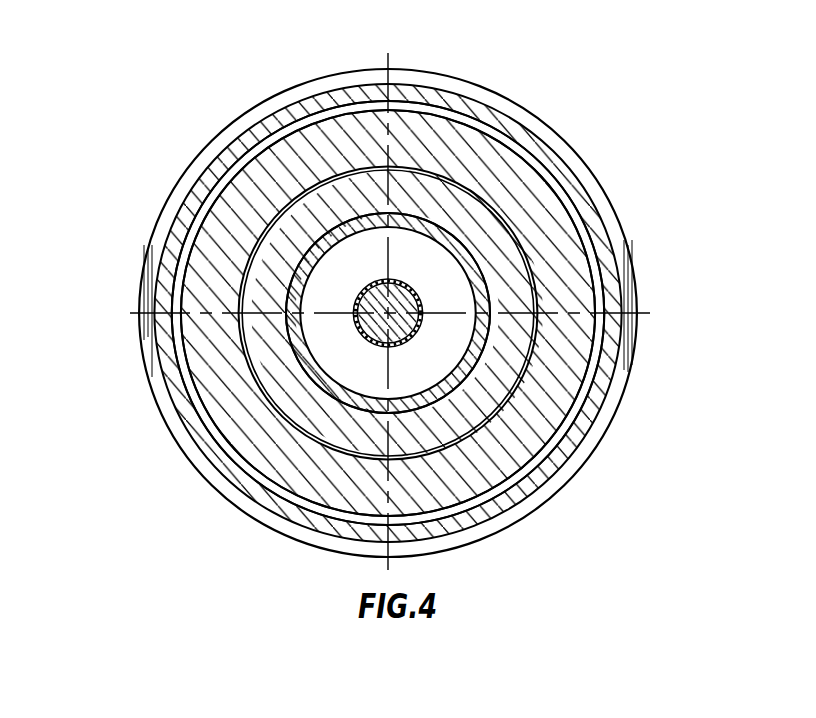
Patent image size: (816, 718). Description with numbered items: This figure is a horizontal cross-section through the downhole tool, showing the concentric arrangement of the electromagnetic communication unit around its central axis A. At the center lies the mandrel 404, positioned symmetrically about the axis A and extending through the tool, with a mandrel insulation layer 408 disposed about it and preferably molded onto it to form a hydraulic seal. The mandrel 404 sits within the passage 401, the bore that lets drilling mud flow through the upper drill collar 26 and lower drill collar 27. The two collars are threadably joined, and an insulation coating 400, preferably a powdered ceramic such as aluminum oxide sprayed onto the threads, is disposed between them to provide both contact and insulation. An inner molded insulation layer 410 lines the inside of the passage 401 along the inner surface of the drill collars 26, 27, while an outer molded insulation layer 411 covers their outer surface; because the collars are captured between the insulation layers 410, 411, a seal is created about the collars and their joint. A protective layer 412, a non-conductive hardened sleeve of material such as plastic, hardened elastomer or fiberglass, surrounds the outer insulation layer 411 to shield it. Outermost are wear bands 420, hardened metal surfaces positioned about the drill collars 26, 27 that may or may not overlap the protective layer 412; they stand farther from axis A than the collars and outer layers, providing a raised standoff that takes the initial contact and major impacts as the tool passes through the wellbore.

The upper drill collar 26 is at (277, 133).
The lower drill collar 27 is at (228, 212).
The insulation coating 400 is at (350, 163).
The passage 401 is at (428, 240).
The mandrel 404 is at (407, 307).
The mandrel insulation layer 408 is at (413, 340).
The inner molded insulation layer 410 is at (487, 305).
The outer molded insulation layer 411 is at (593, 370).
The protective layer 412 is at (597, 402).
The wear band 420 is at (523, 520).
The axis A is at (358, 296).